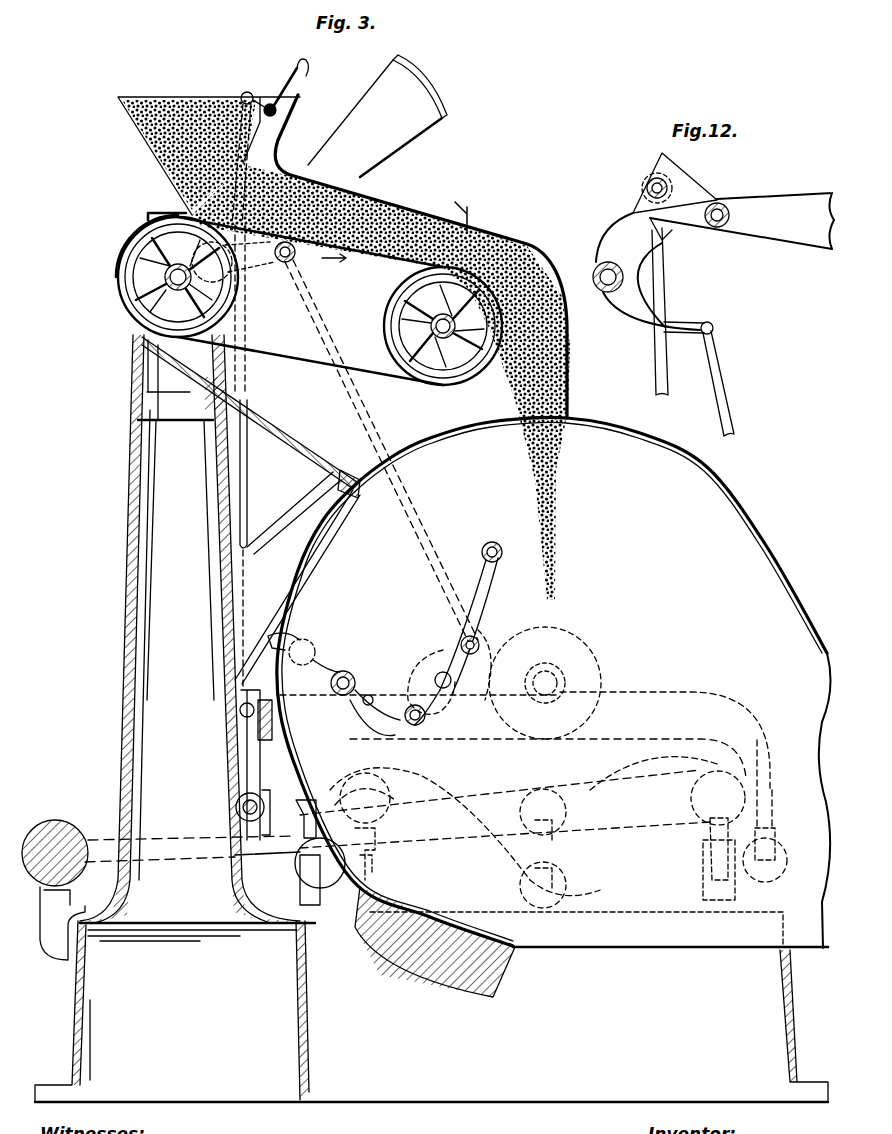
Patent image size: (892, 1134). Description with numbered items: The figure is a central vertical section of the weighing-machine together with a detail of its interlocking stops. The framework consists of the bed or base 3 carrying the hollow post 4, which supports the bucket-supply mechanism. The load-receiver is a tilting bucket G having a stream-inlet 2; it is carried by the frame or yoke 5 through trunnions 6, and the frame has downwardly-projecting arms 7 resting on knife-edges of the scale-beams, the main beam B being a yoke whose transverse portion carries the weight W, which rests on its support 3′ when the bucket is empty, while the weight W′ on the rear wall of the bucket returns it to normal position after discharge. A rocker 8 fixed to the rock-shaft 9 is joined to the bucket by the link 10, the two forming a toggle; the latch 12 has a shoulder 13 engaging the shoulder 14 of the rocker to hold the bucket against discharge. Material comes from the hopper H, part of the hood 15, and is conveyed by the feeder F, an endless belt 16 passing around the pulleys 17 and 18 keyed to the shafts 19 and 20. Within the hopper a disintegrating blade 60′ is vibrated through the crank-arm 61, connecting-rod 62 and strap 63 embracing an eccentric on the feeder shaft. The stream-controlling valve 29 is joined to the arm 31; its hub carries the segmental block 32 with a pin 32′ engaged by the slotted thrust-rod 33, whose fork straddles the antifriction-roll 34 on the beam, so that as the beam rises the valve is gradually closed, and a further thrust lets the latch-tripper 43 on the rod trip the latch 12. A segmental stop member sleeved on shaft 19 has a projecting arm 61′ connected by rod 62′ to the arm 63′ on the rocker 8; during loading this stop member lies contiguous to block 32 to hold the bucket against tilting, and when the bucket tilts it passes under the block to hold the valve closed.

In FIG. 3, the hopper or chute H is at (344, 336).
In FIG. 3, the protecting hood or casing 15 is at (418, 200).
In FIG. 3, the valve arm 31 is at (335, 125).
In FIG. 12, the valve arm 31 is at (742, 221).
In FIG. 3, the stream-controlling valve 29 is at (446, 118).
In FIG. 3, the disintegrating blade 60′ is at (290, 80).
In FIG. 3, the crank-arm 61 is at (247, 92).
In FIG. 3, the connecting-rod 62 is at (228, 150).
In FIG. 3, the shaft 19 is at (165, 277).
In FIG. 12, the shaft 19 is at (605, 293).
In FIG. 3, the pin 32′ is at (238, 270).
In FIG. 12, the pin 32′ is at (648, 188).
In FIG. 3, the segmental block 32 is at (293, 258).
In FIG. 12, the segmental block 32 is at (690, 188).
In FIG. 3, the projecting arm 61′ is at (250, 300).
In FIG. 12, the projecting arm 61′ is at (688, 318).
In FIG. 3, the drum or pulley 17 is at (210, 326).
In FIG. 3, the strap or ring 63 is at (135, 325).
In FIG. 3, the endless belt or apron 16 is at (352, 269).
In FIG. 3, the shaft 20 is at (430, 325).
In FIG. 3, the drum or pulley 18 is at (392, 350).
In FIG. 3, the feeder F is at (310, 301).
In FIG. 3, the rod 62′ is at (385, 388).
In FIG. 12, the rod 62′ is at (726, 380).
In FIG. 3, the bucket G is at (554, 682).
In FIG. 3, the stream-inlet or supply-opening 2 is at (498, 426).
In FIG. 3, the hollow post 4 is at (122, 665).
In FIG. 3, the thrust-rod 33 is at (248, 490).
In FIG. 12, the thrust-rod 33 is at (664, 290).
In FIG. 3, the link 10 is at (482, 600).
In FIG. 3, the arm on rocker 63′ is at (480, 635).
In FIG. 3, the rock-shaft 9 is at (452, 679).
In FIG. 3, the trunnions 6 is at (550, 676).
In FIG. 3, the frame or yoke 5 is at (645, 698).
In FIG. 3, the latch 12 is at (330, 663).
In FIG. 3, the latch-tripper 43 is at (265, 690).
In FIG. 3, the shoulder 13 is at (385, 720).
In FIG. 3, the shoulder 14 is at (421, 722).
In FIG. 3, the rocker 8 is at (470, 742).
In FIG. 3, the antifriction-roll 34 is at (262, 792).
In FIG. 3, the downwardly-projecting arms 7 is at (307, 820).
In FIG. 3, the main beam B is at (272, 850).
In FIG. 3, the weight W is at (65, 830).
In FIG. 3, the support 3′ is at (66, 900).
In FIG. 3, the bed or base 3 is at (431, 1011).
In FIG. 3, the weight W′ is at (470, 992).